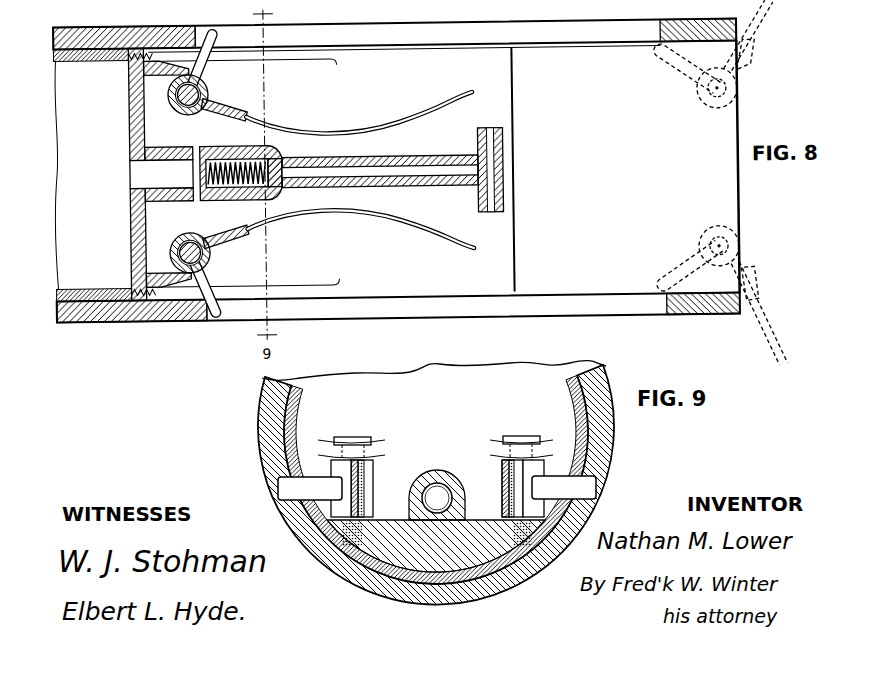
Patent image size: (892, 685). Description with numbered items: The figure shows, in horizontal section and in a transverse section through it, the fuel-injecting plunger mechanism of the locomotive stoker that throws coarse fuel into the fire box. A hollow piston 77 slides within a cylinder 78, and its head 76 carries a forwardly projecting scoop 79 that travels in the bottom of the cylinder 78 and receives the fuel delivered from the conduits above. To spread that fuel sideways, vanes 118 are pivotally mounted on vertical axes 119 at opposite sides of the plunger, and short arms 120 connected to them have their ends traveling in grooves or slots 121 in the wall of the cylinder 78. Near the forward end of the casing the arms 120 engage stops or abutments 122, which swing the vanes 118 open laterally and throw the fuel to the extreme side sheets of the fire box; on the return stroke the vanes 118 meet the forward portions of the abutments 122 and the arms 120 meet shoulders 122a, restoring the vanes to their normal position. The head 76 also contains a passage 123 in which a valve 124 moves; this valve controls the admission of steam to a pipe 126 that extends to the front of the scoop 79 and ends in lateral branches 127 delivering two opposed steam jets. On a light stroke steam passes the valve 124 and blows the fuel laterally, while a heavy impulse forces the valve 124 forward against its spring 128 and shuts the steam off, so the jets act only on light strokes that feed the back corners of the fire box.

In FIG. 8, the head 76 is at (129, 96).
In FIG. 8, the hollow piston 77 is at (93, 54).
In FIG. 8, the cylinder 78 is at (677, 168).
In FIG. 8, the scoop 79 is at (499, 104).
In FIG. 9, the scoop 79 is at (409, 540).
In FIG. 8, the vanes 118 is at (378, 128).
In FIG. 8, the vertical axes 119 is at (207, 87).
In FIG. 9, the vertical axes 119 is at (353, 438).
In FIG. 8, the short arms 120 is at (213, 41).
In FIG. 9, the short arms 120 is at (437, 488).
In FIG. 8, the grooves or slots 121 is at (437, 32).
In FIG. 9, the grooves or slots 121 is at (276, 481).
In FIG. 8, the stops or abutments 122 is at (687, 31).
In FIG. 8, the shoulders 122a is at (197, 29).
In FIG. 8, the passage 123 is at (137, 171).
In FIG. 8, the valve 124 is at (230, 139).
In FIG. 8, the pipe 126 is at (390, 158).
In FIG. 9, the pipe 126 is at (447, 476).
In FIG. 8, the lateral branches 127 is at (490, 149).
In FIG. 8, the spring 128 is at (265, 146).